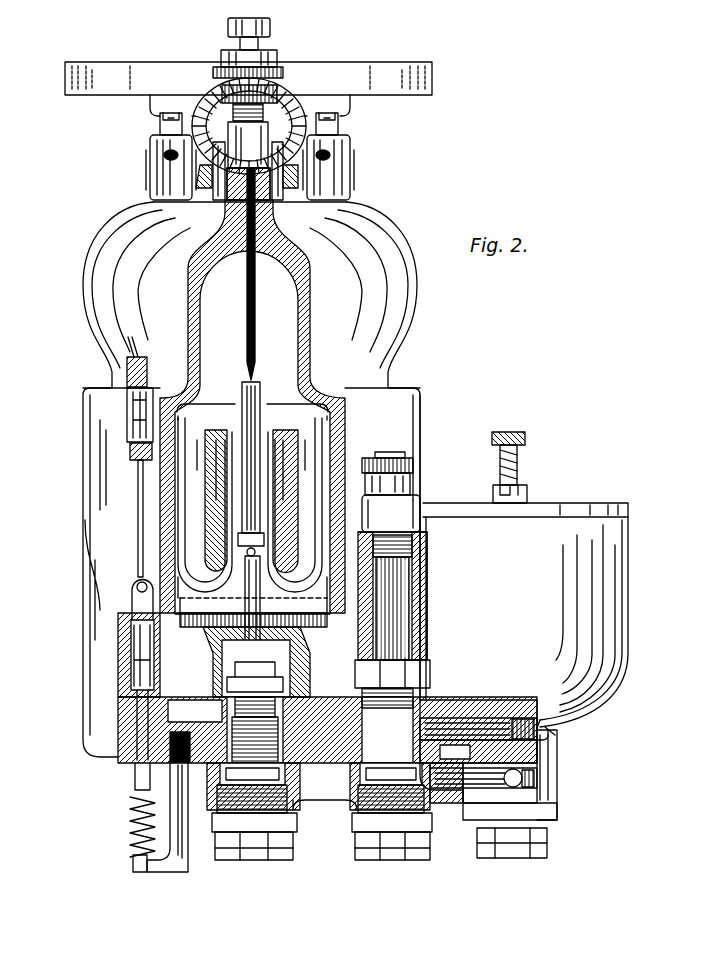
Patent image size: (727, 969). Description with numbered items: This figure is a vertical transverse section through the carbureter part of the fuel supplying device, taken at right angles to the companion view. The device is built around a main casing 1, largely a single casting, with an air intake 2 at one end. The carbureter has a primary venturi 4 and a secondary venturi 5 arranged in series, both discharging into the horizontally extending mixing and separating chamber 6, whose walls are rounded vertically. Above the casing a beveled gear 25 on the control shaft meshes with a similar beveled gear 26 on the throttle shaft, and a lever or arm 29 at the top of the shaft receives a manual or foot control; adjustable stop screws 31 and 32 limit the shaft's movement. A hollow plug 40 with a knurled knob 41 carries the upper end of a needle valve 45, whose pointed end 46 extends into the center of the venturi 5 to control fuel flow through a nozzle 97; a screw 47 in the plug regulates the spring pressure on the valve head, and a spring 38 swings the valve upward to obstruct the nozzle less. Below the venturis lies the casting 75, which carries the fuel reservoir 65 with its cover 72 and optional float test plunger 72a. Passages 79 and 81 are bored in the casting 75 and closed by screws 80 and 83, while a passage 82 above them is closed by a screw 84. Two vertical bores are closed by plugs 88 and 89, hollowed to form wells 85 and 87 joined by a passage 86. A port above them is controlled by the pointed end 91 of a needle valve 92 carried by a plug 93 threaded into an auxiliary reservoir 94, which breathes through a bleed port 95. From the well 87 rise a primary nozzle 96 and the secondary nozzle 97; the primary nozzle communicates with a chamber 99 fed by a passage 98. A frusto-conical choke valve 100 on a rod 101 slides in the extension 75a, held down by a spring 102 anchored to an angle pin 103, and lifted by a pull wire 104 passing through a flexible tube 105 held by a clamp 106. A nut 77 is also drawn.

The main casing 1 is at (420, 410).
The air intake 2 is at (372, 62).
The primary venturi 4 is at (232, 515).
The secondary venturi 5 is at (252, 407).
The mixing and separating chamber 6 is at (417, 285).
The beveled gear 25 is at (300, 178).
The beveled gear 26 is at (272, 112).
The lever or arm 29 is at (270, 27).
The adjustable stop screw 31 is at (170, 156).
The adjustable stop screw 32 is at (326, 155).
The spring 38 is at (228, 190).
The hollow plug 40 is at (230, 118).
The knurled disk or knob 41 is at (213, 72).
The needle valve 45 is at (256, 305).
The pointed end of needle valve 46 is at (256, 385).
The screw 47 is at (237, 62).
The fuel reservoir 65 is at (600, 690).
The top or cover 72 is at (552, 505).
The float test plunger 72a is at (517, 455).
The casting 75 is at (557, 793).
The extension of casting 75a is at (118, 654).
The nut 77 is at (547, 845).
The passage 79 is at (557, 812).
The screw 80 is at (478, 751).
The passage 81 is at (460, 800).
The passage 82 is at (480, 700).
The screw 83 is at (538, 766).
The screw 84 is at (548, 736).
The well 85 is at (392, 840).
The passage 86 is at (358, 835).
The well 87 is at (258, 840).
The screw threaded plug 88 is at (425, 852).
The screw threaded plug 89 is at (283, 855).
The pointed end of needle valve 91 is at (466, 728).
The needle valve 92 is at (395, 587).
The plug 93 is at (373, 452).
The auxiliary reservoir or chamber 94 is at (425, 620).
The bleed port 95 is at (375, 535).
The primary nozzle 96 is at (238, 547).
The secondary nozzle 97 is at (240, 418).
The passage 98 is at (322, 790).
The chamber 99 is at (327, 730).
The choke valve 100 is at (205, 655).
The rod 101 is at (132, 590).
The spring 102 is at (130, 808).
The angle pin 103 is at (182, 872).
The pull wire 104 is at (138, 488).
The flexible tube 105 is at (127, 370).
The clamp 106 is at (127, 412).